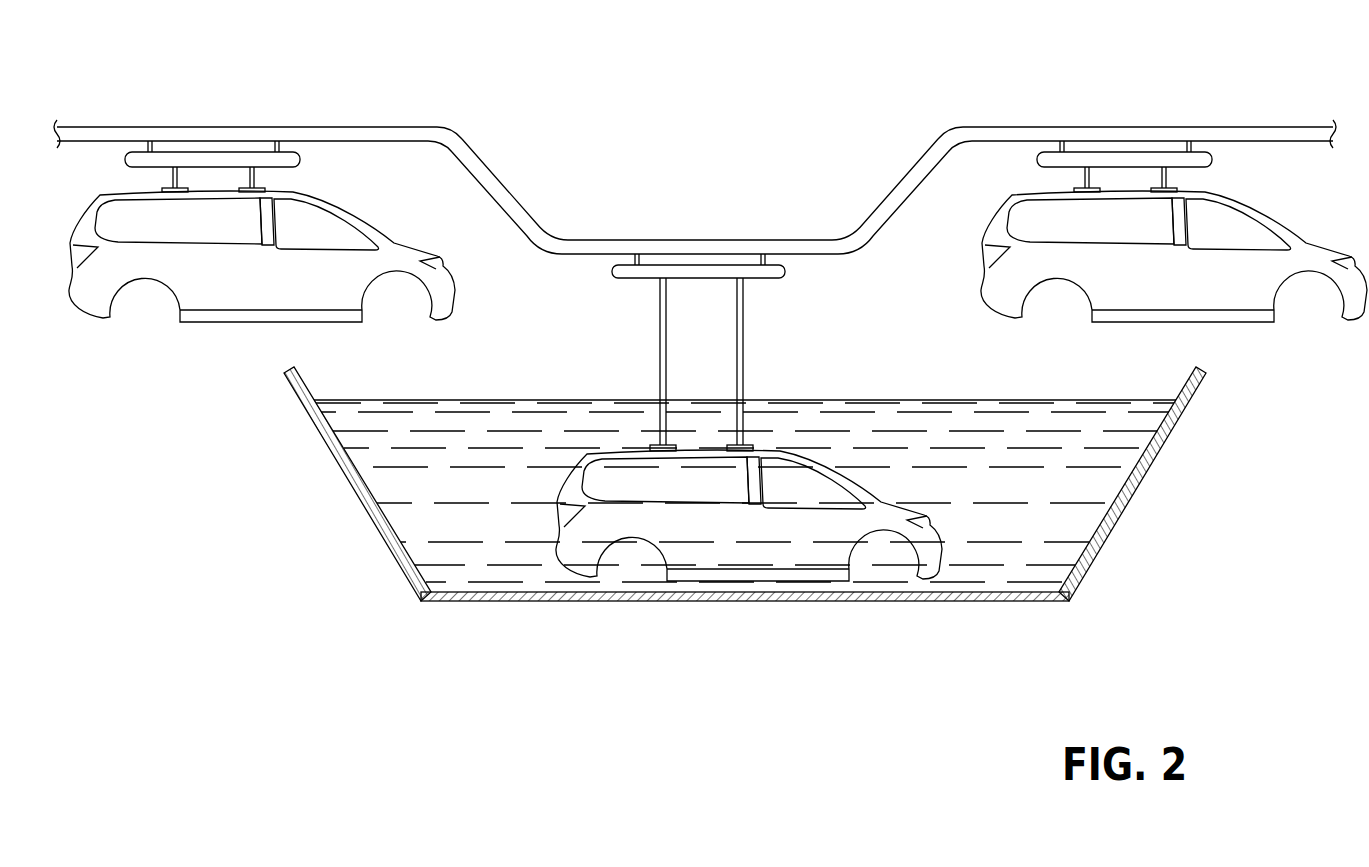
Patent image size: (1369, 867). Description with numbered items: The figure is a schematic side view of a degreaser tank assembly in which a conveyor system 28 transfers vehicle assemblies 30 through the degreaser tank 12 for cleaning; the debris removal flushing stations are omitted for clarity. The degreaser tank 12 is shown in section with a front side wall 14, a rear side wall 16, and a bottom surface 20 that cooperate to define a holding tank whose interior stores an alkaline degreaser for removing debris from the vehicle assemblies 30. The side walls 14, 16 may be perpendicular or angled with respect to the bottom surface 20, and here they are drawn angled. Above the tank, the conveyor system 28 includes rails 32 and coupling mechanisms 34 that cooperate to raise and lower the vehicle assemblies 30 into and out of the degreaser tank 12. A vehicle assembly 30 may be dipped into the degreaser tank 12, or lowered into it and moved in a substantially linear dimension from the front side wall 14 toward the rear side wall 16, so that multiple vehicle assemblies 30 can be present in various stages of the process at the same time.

The degreaser tank 12 is at (716, 520).
The front side wall 14 is at (310, 425).
The rear side wall 16 is at (1113, 520).
The bottom surface 20 is at (780, 600).
The conveyor system 28 is at (695, 138).
The vehicle assembly 30 is at (222, 315).
The rail 32 is at (502, 178).
The coupling mechanism 34 is at (125, 160).